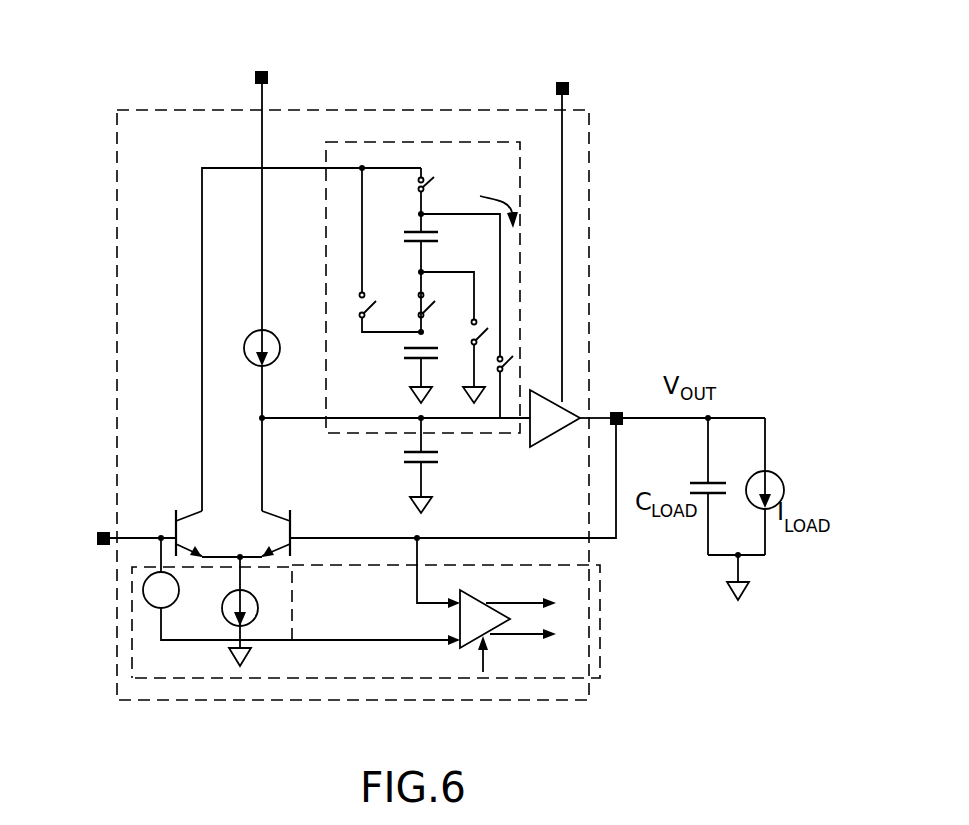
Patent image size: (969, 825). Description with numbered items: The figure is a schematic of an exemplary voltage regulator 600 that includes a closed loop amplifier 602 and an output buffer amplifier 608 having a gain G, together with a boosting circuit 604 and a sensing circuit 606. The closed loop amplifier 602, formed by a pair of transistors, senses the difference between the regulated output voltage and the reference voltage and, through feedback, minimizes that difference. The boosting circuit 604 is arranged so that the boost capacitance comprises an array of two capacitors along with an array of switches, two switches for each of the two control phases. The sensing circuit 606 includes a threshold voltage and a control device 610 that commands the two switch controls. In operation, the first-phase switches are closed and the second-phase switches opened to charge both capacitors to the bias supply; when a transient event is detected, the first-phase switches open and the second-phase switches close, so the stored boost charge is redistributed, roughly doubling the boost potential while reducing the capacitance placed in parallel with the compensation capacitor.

The voltage regulator 600 is at (346, 92).
The closed loop amplifier 602 is at (170, 493).
The boosting circuit 604 is at (434, 126).
The sensing circuit 606 is at (458, 659).
The output buffer amplifier 608 is at (545, 447).
The control device 610 is at (488, 592).